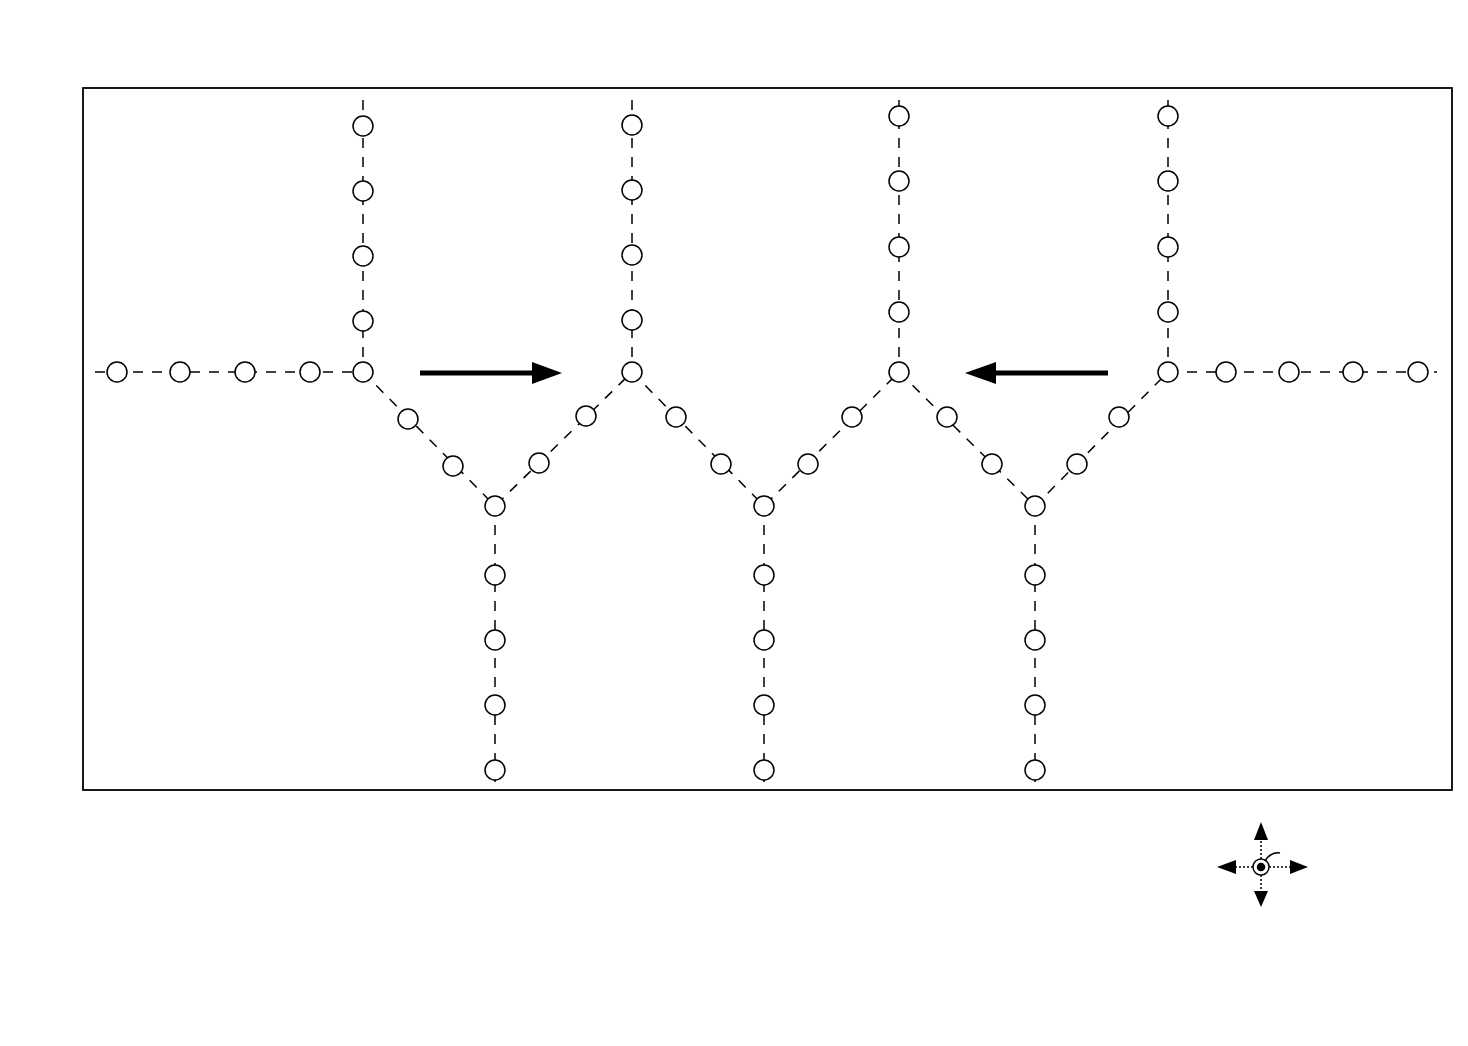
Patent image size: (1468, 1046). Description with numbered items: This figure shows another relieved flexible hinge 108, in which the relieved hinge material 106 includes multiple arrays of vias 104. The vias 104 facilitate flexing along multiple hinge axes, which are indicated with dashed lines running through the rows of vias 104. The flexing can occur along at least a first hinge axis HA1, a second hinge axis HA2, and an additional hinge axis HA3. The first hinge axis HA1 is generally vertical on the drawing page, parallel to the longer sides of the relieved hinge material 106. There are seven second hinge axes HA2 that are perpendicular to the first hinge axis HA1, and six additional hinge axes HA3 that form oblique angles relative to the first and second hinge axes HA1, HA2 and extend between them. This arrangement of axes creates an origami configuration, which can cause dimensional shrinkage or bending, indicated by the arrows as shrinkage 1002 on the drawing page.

The vias 104 is at (766, 439).
The relieved hinge material 106 is at (767, 439).
The relieved flexible hinge 108 is at (524, 82).
The dimensional shrinkage 1002 is at (764, 376).
The first hinge axis HA1 is at (240, 368).
The second hinge axis HA2 is at (362, 209).
The additional hinge axis HA3 is at (451, 462).